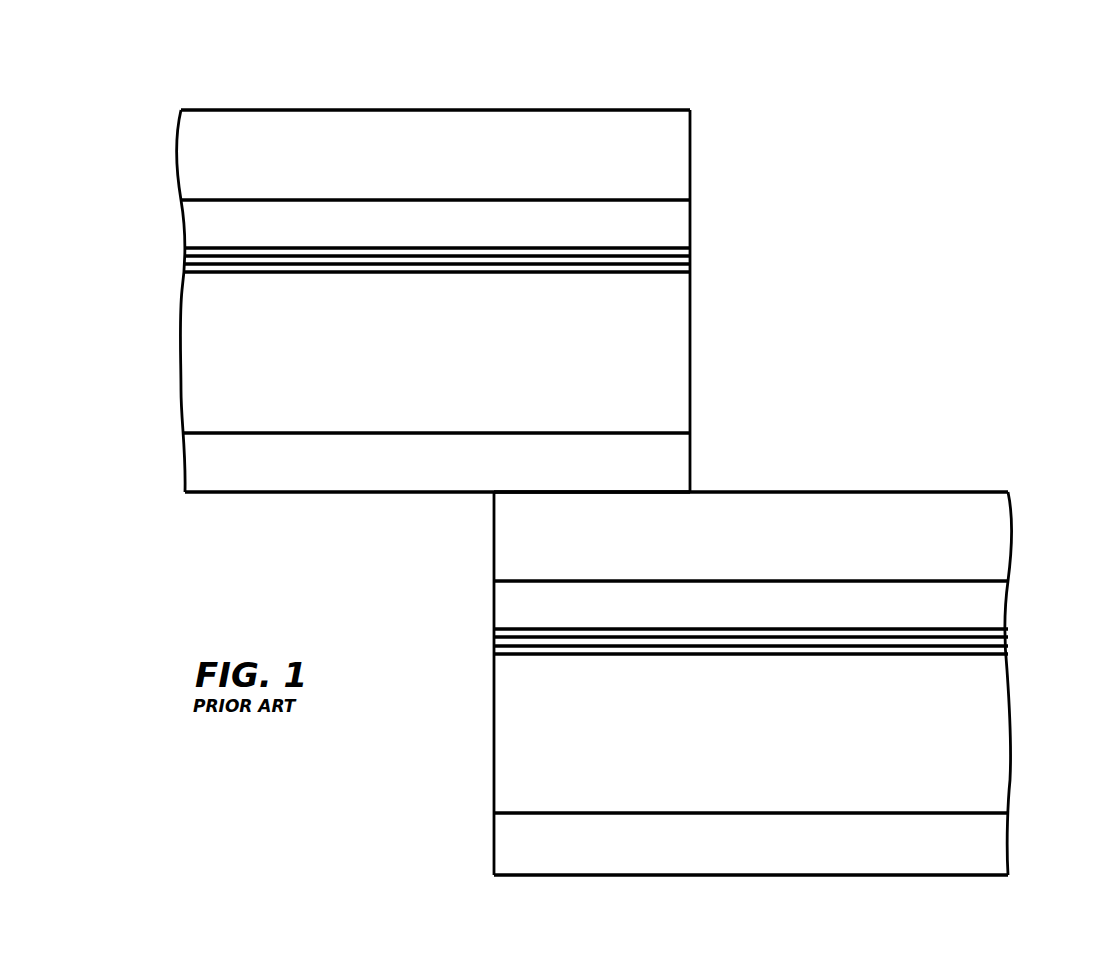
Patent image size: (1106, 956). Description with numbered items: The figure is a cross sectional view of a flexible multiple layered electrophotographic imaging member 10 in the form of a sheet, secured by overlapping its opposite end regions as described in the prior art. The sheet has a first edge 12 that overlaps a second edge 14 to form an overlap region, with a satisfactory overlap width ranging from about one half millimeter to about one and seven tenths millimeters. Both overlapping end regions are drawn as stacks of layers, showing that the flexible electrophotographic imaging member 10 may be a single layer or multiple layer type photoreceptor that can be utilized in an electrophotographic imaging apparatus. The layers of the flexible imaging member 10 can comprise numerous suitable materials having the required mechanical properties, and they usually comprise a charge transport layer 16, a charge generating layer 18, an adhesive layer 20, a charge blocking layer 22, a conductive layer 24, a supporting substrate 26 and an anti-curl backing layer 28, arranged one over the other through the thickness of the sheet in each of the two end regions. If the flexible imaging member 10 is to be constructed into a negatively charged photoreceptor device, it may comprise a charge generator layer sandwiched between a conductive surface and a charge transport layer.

The flexible electrophotographic imaging member 10 is at (808, 195).
The first edge 12 is at (588, 98).
The second edge 14 is at (658, 898).
The charge transport layer 16 is at (195, 150).
The charge generating layer 18 is at (193, 213).
The adhesive layer 20 is at (185, 254).
The charge blocking layer 22 is at (185, 263).
The conductive layer 24 is at (185, 269).
The supporting substrate 26 is at (205, 354).
The anti-curl backing layer 28 is at (205, 448).